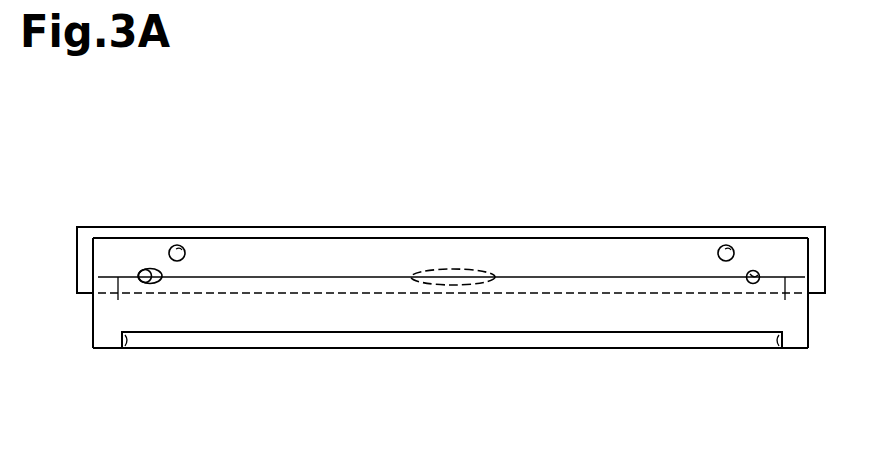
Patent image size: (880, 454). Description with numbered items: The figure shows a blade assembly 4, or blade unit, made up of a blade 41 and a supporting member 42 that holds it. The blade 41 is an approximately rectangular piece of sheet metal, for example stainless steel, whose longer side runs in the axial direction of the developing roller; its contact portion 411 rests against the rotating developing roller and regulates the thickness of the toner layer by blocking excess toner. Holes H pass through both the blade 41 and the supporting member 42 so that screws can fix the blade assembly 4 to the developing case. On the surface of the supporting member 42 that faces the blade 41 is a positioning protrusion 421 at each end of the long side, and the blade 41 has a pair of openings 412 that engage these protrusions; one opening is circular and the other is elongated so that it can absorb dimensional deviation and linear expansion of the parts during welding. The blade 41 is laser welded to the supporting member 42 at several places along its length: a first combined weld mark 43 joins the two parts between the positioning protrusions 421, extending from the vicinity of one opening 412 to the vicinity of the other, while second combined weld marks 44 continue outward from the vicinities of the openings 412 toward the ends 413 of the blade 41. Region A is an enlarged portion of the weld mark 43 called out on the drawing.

The blade assembly 4 is at (678, 151).
The blade 41 is at (314, 256).
The supporting member 42 is at (386, 227).
The first combined weld mark 43 is at (587, 277).
The second combined weld marks 44 is at (118, 300).
The contact portion 411 is at (473, 340).
The openings 412 is at (149, 284).
The ends 413 is at (93, 318).
The positioning protrusion 421 is at (148, 268).
The holes H is at (178, 245).
The region A is at (472, 268).